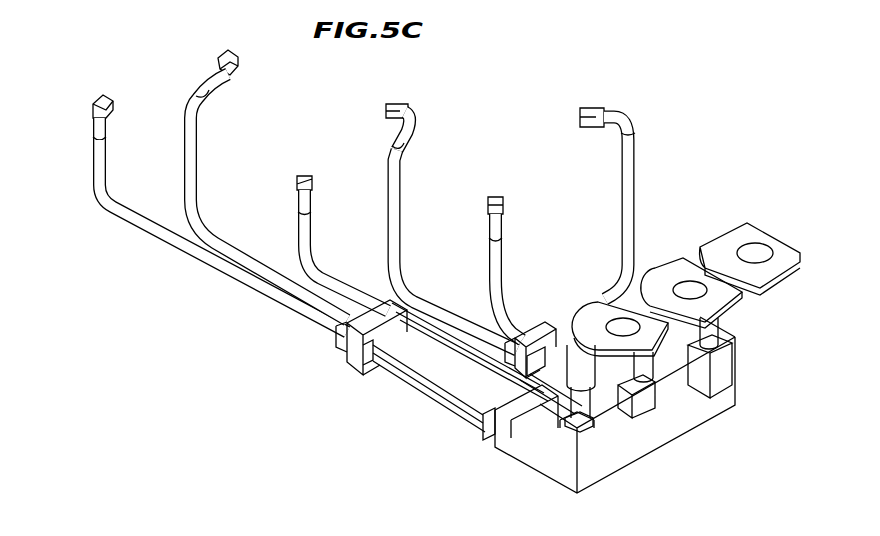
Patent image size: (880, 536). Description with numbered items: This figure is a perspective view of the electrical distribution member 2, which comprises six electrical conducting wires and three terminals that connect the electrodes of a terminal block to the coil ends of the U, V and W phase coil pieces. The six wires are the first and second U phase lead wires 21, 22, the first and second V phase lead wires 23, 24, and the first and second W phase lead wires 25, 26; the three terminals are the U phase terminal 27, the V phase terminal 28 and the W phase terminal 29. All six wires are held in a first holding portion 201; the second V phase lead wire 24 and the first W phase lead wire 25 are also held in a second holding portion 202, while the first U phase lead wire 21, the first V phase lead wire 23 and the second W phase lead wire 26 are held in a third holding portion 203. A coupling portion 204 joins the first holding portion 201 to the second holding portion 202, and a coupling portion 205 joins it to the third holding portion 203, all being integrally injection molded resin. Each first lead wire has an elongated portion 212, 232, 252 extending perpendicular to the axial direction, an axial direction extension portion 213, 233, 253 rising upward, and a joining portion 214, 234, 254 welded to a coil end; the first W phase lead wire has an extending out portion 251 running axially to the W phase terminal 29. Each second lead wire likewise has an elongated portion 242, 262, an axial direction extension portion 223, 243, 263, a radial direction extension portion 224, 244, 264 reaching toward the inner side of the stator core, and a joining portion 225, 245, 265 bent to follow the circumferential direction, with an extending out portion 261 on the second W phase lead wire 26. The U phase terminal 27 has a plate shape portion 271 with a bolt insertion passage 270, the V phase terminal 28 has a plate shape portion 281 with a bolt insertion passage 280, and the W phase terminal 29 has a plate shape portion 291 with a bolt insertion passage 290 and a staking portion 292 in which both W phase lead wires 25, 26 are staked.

The electrical distribution member 2 is at (791, 455).
The first U phase lead wire 21 is at (316, 214).
The second U phase lead wire 22 is at (618, 179).
The first V phase lead wire 23 is at (192, 188).
The second V phase lead wire 24 is at (428, 206).
The first W phase lead wire 25 is at (500, 241).
The second W phase lead wire 26 is at (357, 253).
The U phase terminal 27 is at (781, 236).
The V phase terminal 28 is at (720, 288).
The W phase terminal 29 is at (737, 388).
The first holding portion 201 is at (591, 422).
The second holding portion 202 is at (520, 337).
The third holding portion 203 is at (352, 352).
The coupling portion 204 is at (548, 352).
The coupling portion 205 is at (428, 375).
The elongated portion 212 is at (317, 268).
The axial direction extension portion 213 is at (297, 227).
The joining portion 214 is at (307, 177).
The axial direction extension portion 223 is at (622, 237).
The radial direction extension portion 224 is at (630, 136).
The joining portion 225 is at (590, 108).
The elongated portion 232 is at (137, 225).
The axial direction extension portion 233 is at (98, 152).
The joining portion 234 is at (103, 100).
The elongated portion 242 is at (462, 325).
The axial direction extension portion 243 is at (397, 210).
The radial direction extension portion 244 is at (398, 147).
The joining portion 245 is at (392, 100).
The extending out portion 251 is at (605, 442).
The elongated portion 252 is at (513, 340).
The axial direction extension portion 253 is at (501, 243).
The joining portion 254 is at (497, 197).
The extending out portion 261 is at (553, 443).
The elongated portion 262 is at (282, 267).
The axial direction extension portion 263 is at (190, 155).
The radial direction extension portion 264 is at (205, 88).
The joining portion 265 is at (217, 60).
The bolt insertion passage 270 is at (757, 255).
The plate shape portion 271 is at (745, 223).
The bolt insertion passage 280 is at (720, 298).
The plate shape portion 281 is at (685, 275).
The bolt insertion passage 290 is at (652, 342).
The plate shape portion 291 is at (607, 307).
The staking portion 292 is at (497, 443).